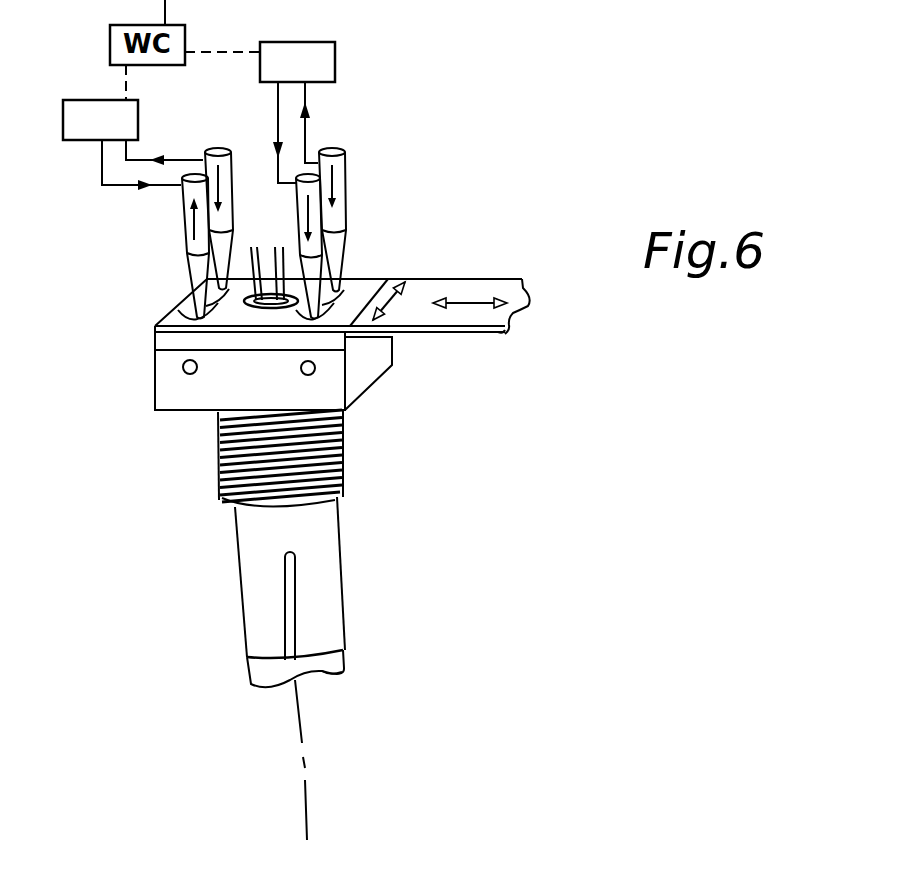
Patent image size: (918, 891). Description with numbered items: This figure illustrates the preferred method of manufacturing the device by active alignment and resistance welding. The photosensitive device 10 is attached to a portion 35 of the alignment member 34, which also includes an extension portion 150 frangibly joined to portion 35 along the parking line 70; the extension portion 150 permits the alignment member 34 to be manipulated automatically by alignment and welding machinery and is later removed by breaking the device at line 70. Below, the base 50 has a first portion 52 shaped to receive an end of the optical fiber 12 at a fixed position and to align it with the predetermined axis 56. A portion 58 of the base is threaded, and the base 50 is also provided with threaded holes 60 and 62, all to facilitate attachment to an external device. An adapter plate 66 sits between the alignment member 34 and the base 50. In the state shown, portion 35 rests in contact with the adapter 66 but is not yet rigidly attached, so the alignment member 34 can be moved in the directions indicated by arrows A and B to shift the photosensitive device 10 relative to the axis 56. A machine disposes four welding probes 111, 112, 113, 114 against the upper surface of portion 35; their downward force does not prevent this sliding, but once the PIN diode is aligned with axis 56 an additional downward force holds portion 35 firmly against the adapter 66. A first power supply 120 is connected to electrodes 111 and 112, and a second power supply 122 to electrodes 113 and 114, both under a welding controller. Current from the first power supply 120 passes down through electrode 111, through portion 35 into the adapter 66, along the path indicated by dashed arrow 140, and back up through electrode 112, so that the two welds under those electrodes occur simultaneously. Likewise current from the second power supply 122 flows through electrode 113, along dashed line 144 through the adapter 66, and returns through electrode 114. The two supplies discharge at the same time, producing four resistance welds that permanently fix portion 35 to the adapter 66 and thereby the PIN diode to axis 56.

The photosensitive device 10 is at (162, 351).
The optical fiber 12 is at (330, 658).
The alignment member 34 is at (503, 282).
The portion of the alignment member 35 is at (360, 280).
The base 50 is at (353, 352).
The first portion of the base 52 is at (343, 578).
The predetermined axis 56 is at (305, 816).
The threaded portion of the base 58 is at (345, 447).
The threaded hole 60 is at (190, 375).
The threaded hole 62 is at (352, 387).
The adapter plate 66 is at (250, 318).
The parking line 70 is at (403, 282).
The welding probe 111 is at (184, 252).
The welding probe 112 is at (229, 170).
The welding probe 113 is at (303, 215).
The welding probe 114 is at (343, 200).
The first power supply 120 is at (140, 120).
The second power supply 122 is at (335, 60).
The dashed arrow 140 is at (183, 321).
The dashed line 144 is at (353, 335).
The extension portion 150 is at (503, 333).
The arrow A is at (463, 302).
The arrow B is at (388, 303).